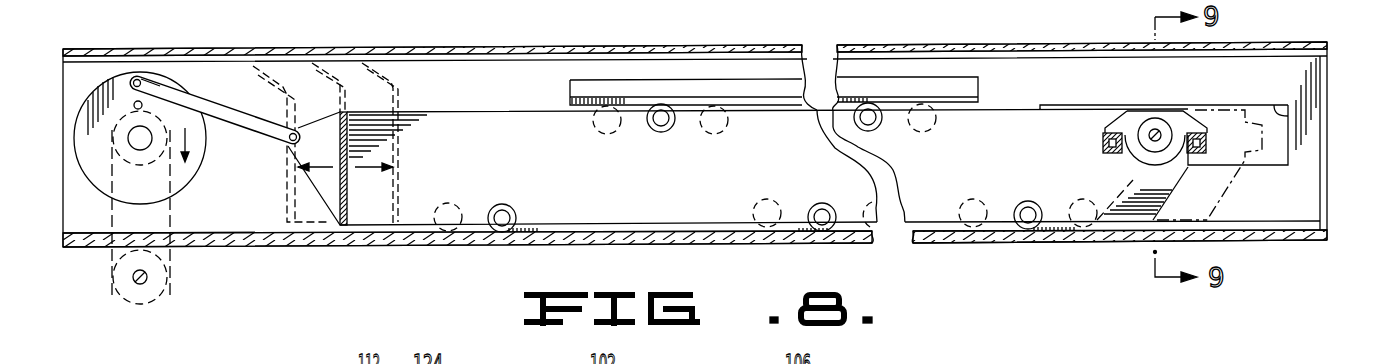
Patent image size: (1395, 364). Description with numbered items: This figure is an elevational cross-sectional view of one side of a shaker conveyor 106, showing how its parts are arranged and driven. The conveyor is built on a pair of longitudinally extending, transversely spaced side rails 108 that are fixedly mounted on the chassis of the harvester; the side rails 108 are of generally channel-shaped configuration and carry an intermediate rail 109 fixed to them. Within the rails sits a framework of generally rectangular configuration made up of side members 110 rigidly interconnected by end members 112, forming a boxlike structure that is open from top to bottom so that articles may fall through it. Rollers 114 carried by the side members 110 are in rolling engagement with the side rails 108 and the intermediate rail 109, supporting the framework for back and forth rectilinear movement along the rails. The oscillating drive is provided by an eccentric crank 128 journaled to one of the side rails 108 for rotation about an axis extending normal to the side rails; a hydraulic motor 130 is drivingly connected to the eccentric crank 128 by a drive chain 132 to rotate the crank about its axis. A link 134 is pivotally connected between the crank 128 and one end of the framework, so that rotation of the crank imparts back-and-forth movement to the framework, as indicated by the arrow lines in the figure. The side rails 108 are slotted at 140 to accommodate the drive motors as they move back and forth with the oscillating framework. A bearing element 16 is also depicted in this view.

The shaker conveyor 106 is at (745, 40).
The side rails 108 is at (67, 205).
The intermediate rail 109 is at (972, 86).
The side members 110 is at (497, 115).
The end members 112 is at (338, 90).
The rollers 114 is at (505, 204).
The eccentric crank 128 is at (82, 113).
The hydraulic motor 130 is at (155, 300).
The drive chain 132 is at (171, 255).
The link 134 is at (255, 133).
The bearing assembly 16 is at (1152, 138).
The slot 140 is at (1283, 117).